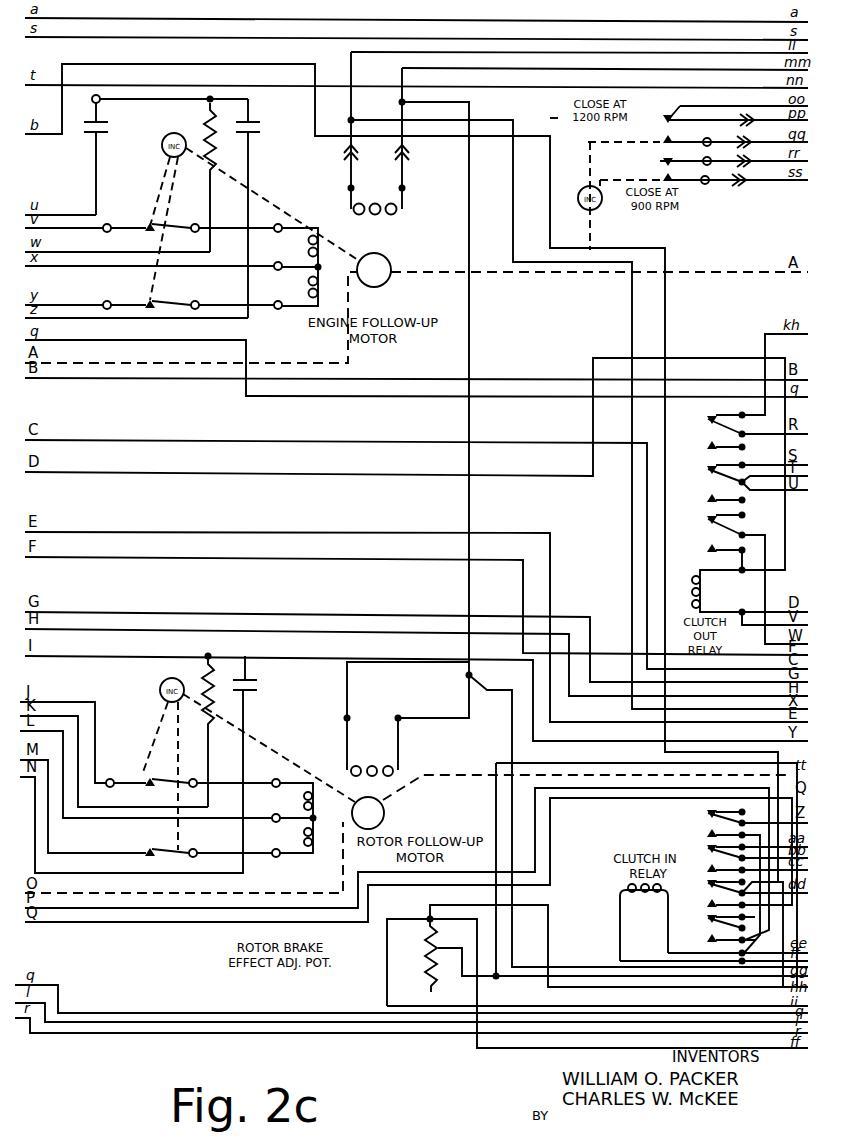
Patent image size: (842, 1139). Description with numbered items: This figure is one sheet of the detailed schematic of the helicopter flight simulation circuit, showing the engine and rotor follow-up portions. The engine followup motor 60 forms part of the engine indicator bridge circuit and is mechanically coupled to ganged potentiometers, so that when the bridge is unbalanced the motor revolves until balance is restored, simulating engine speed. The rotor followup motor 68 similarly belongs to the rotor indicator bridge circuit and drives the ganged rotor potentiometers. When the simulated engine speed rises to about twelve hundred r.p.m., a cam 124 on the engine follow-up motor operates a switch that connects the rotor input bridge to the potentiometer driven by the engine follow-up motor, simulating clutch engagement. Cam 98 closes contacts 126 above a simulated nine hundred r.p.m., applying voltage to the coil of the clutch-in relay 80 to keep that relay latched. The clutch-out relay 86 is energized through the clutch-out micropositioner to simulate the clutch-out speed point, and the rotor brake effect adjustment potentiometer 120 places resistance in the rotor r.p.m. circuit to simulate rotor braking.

The engine followup motor 60 is at (388, 283).
The rotor followup motor 68 is at (385, 820).
The clutch-in relay 80 is at (639, 905).
The clutch-out relay 86 is at (706, 500).
The cam 98 is at (585, 189).
The rotor brake effect adjustment potentiometer 120 is at (428, 954).
The cam 124 is at (552, 118).
The contacts 126 is at (699, 200).